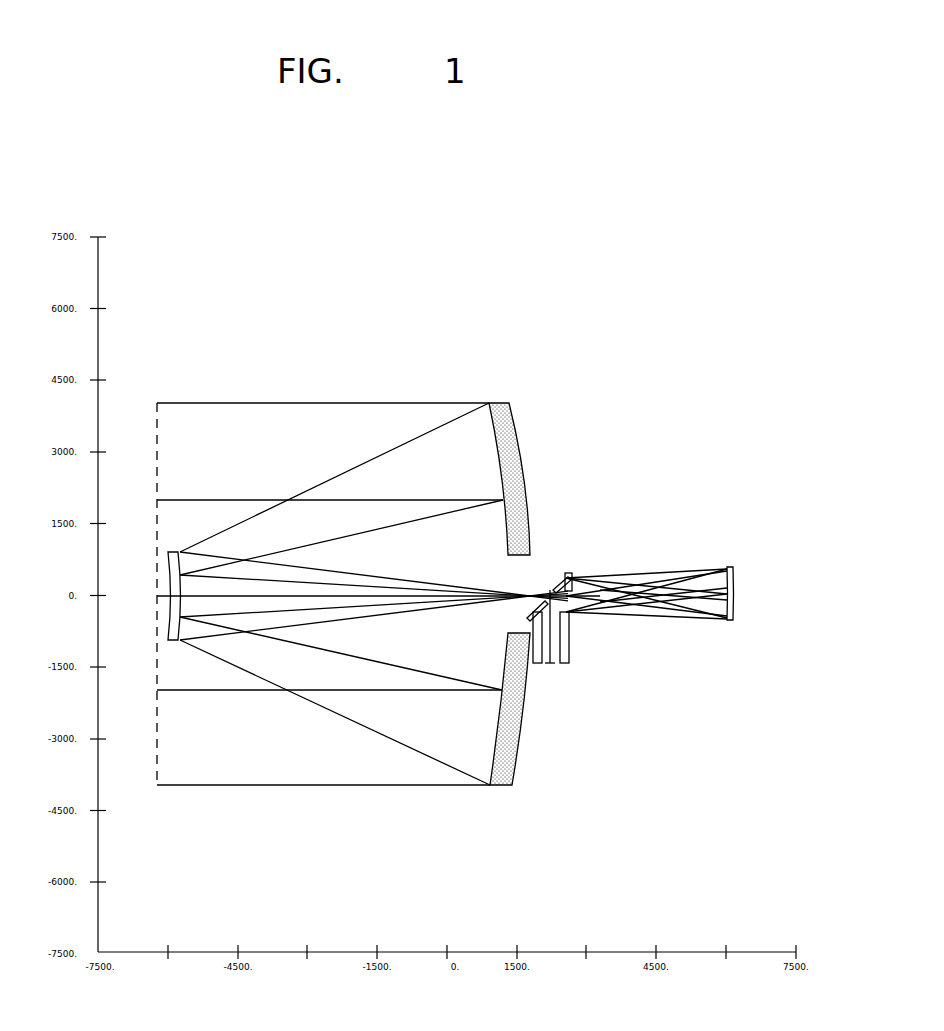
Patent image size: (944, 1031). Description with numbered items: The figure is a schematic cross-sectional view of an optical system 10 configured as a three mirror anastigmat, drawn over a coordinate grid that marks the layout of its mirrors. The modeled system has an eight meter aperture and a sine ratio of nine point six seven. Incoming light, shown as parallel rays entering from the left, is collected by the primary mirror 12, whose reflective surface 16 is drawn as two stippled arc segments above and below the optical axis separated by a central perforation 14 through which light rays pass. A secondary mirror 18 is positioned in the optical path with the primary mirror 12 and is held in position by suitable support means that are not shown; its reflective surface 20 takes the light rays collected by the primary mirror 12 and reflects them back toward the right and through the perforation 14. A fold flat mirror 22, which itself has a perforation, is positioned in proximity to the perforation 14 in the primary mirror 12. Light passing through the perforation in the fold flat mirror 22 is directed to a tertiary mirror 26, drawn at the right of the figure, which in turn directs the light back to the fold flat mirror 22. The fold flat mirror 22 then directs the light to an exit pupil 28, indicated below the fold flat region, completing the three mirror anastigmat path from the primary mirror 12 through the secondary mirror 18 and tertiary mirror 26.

The optical system 10 is at (520, 325).
The primary mirror 12 is at (522, 466).
The perforation 14 is at (506, 618).
The reflective surface 16 is at (495, 748).
The secondary mirror 18 is at (172, 536).
The reflective surface 20 is at (185, 822).
The fold flat mirror 22 is at (558, 580).
The tertiary mirror 26 is at (735, 571).
The exit pupil 28 is at (558, 668).